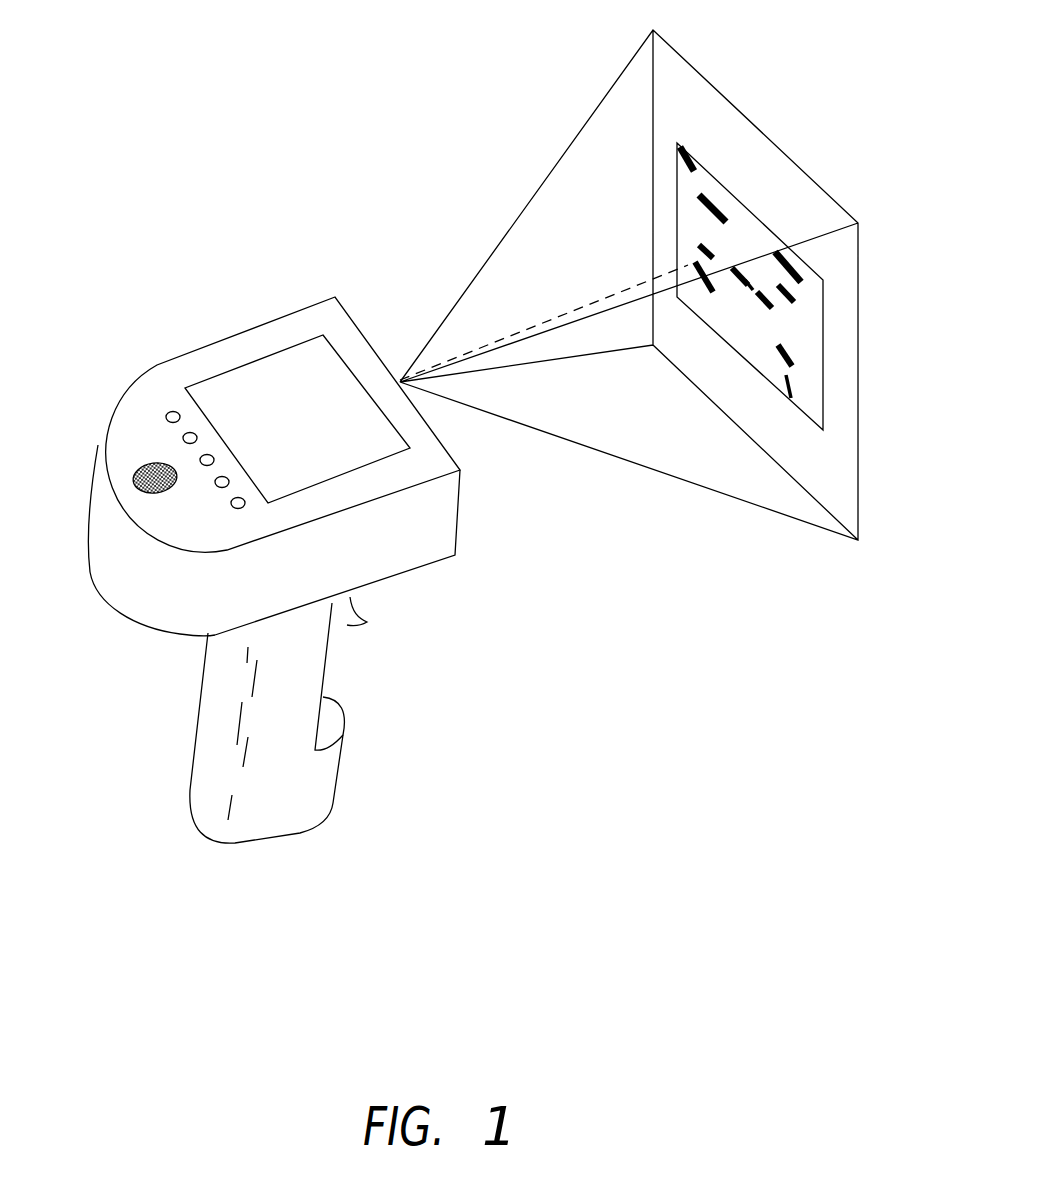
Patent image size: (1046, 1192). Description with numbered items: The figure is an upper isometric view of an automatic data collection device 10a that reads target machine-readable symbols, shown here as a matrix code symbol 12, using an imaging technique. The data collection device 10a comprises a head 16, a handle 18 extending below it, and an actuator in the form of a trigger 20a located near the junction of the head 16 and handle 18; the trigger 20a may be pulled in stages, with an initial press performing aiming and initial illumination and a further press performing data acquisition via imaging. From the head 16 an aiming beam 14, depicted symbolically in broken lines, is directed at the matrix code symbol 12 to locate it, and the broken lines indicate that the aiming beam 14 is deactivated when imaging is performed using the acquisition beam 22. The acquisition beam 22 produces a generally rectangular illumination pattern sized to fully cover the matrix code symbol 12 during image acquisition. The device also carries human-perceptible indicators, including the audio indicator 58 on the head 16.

The automatic data collection device 10a is at (200, 292).
The matrix code symbol 12 is at (762, 218).
The aiming beam 14 is at (600, 300).
The head 16 is at (133, 418).
The handle 18 is at (212, 723).
The trigger 20a is at (348, 627).
The acquisition beam 22 is at (555, 362).
The speaker 58 is at (138, 487).